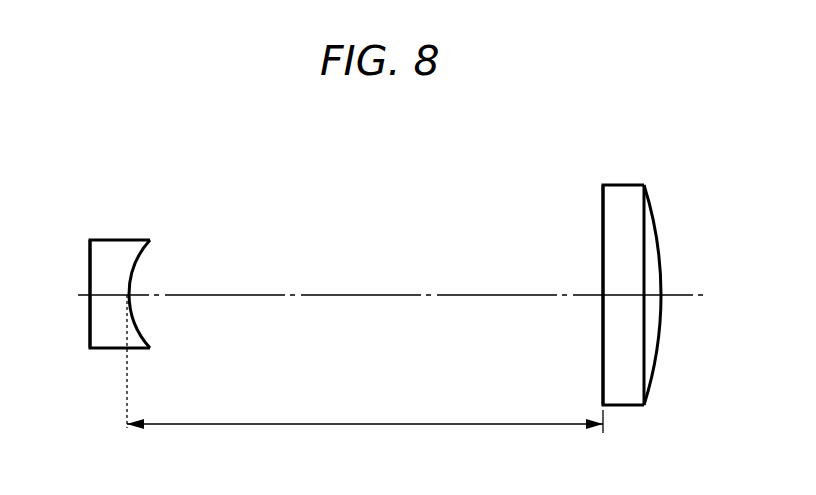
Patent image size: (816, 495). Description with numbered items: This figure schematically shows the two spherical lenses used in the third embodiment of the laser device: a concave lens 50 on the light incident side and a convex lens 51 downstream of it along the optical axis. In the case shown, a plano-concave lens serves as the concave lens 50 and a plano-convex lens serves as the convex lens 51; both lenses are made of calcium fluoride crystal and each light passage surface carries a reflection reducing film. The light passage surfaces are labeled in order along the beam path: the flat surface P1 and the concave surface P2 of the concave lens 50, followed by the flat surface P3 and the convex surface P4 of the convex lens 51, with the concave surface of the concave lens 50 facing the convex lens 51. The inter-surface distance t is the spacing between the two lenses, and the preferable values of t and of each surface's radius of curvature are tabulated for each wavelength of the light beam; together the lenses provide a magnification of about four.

The concave lens 50 is at (124, 230).
The convex lens 51 is at (615, 258).
The light passage surface P1 is at (88, 257).
The light passage surface P2 is at (139, 256).
The light passage surface P3 is at (600, 237).
The light passage surface P4 is at (660, 233).
The inter-surface distance t is at (365, 364).